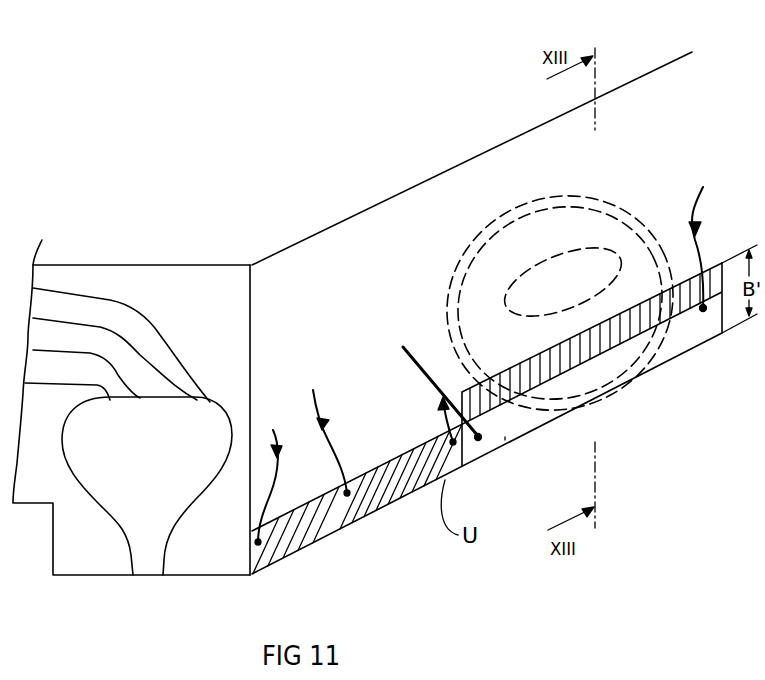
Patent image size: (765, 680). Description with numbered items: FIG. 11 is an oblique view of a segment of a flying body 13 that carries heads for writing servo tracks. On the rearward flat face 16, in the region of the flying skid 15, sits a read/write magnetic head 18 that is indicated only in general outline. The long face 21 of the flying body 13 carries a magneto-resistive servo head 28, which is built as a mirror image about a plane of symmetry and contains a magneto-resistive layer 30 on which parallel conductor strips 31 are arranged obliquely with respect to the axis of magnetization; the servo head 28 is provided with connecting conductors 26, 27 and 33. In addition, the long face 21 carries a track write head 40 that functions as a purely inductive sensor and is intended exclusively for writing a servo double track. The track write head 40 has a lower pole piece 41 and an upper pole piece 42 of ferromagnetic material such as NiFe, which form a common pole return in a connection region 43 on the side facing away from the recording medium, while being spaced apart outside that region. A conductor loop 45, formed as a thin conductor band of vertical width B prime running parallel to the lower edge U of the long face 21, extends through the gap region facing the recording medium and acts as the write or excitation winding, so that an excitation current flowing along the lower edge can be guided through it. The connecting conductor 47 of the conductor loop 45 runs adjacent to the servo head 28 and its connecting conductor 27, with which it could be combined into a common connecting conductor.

The flying body 13 is at (141, 392).
The flying skid 15 is at (108, 578).
The rearward flat face 16 is at (122, 345).
The read/write magnetic head 18 is at (147, 486).
The long face 21 is at (472, 160).
The connecting conductor 26 is at (283, 463).
The connecting conductor 27 is at (437, 398).
The servo head 28 is at (475, 490).
The magneto-resistive layer 30 is at (328, 527).
The conductor strips 31 is at (292, 548).
The connecting conductor 33 is at (322, 417).
The track write head 40 is at (730, 352).
The lower pole piece 41 is at (487, 266).
The upper pole piece 42 is at (522, 238).
The connection region 43 is at (577, 263).
The conductor loop 45 is at (505, 437).
The connecting conductor 47 is at (430, 373).